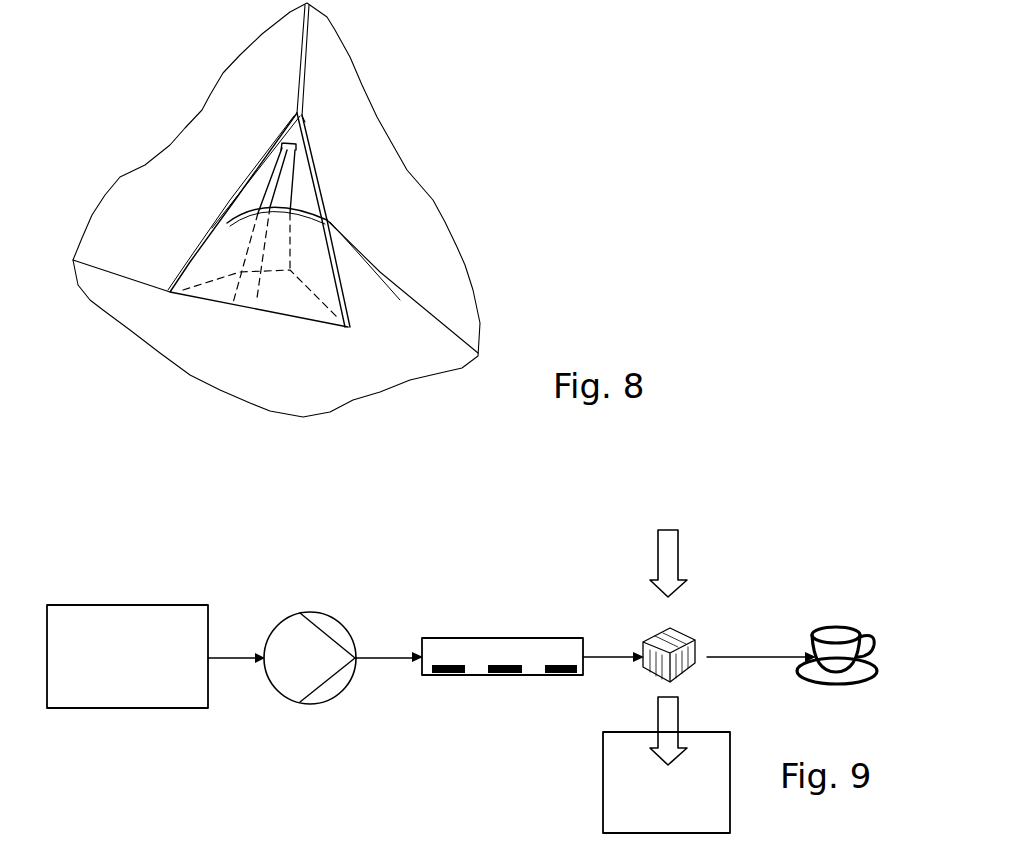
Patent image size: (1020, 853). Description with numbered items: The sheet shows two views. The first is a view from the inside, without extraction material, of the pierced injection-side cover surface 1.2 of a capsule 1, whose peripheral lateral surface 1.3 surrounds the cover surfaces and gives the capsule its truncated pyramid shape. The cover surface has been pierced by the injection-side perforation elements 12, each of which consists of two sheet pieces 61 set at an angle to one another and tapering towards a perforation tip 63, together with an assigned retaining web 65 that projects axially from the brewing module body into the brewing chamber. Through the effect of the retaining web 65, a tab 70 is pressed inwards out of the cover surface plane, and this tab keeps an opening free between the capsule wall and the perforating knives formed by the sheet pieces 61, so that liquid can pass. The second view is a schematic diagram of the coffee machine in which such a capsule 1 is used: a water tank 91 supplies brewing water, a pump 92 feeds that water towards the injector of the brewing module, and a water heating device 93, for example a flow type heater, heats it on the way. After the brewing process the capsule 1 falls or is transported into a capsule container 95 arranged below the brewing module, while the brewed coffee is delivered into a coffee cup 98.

In FIG. 9, the capsule 1 is at (670, 655).
In FIG. 8, the cover surface 1.2 is at (380, 316).
In FIG. 8, the peripheral lateral surface 1.3 is at (232, 102).
In FIG. 8, the injection-side perforation elements 12 is at (253, 180).
In FIG. 8, the sheet pieces 61 is at (310, 193).
In FIG. 8, the perforation tip 63 is at (300, 115).
In FIG. 8, the retaining web 65 is at (278, 183).
In FIG. 8, the tab 70 is at (220, 250).
In FIG. 9, the water tank 91 is at (168, 675).
In FIG. 9, the pump 92 is at (313, 652).
In FIG. 9, the water heating device 93 is at (482, 640).
In FIG. 9, the capsule container 95 is at (627, 785).
In FIG. 9, the coffee cup 98 is at (832, 653).